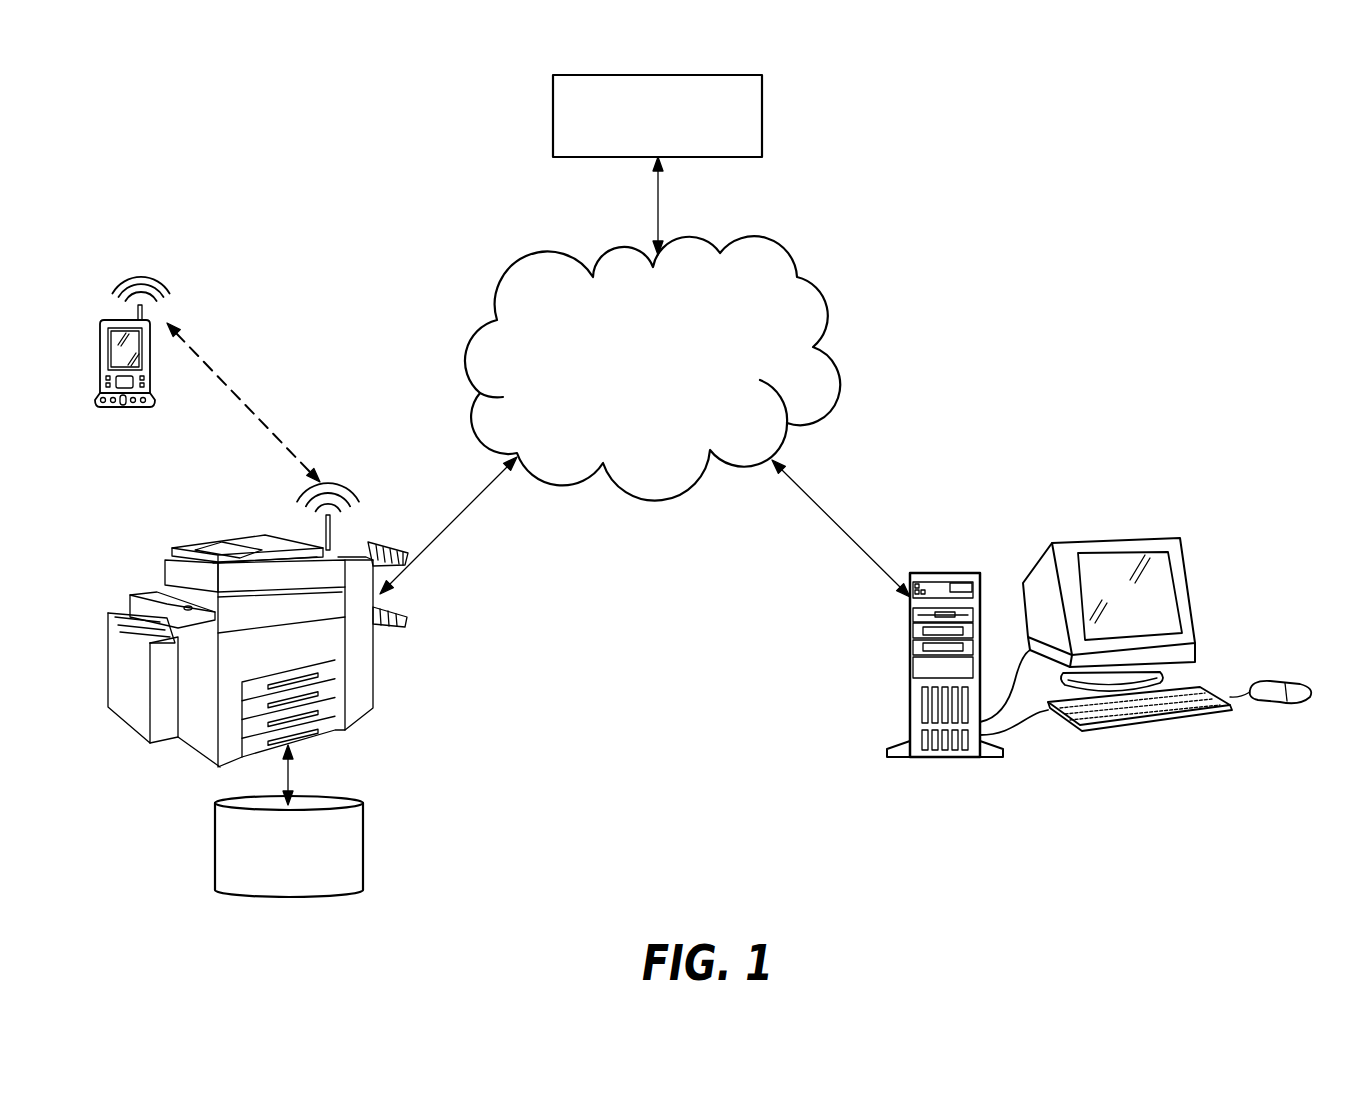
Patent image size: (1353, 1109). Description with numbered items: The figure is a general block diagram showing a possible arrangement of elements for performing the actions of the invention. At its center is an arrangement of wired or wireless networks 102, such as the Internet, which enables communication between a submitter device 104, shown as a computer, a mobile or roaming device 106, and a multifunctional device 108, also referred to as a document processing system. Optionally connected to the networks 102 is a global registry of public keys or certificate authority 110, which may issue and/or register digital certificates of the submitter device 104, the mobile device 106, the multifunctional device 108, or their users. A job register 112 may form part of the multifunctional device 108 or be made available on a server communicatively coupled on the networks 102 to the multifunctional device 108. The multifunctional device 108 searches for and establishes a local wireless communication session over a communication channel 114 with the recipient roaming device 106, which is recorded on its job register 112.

The networks 102 is at (623, 246).
The submitter device 104 is at (1192, 598).
The mobile device 106 is at (118, 410).
The multifunctional device 108 is at (373, 683).
The certificate authority 110 is at (762, 119).
The job register 112 is at (365, 845).
The communication channel 114 is at (253, 409).